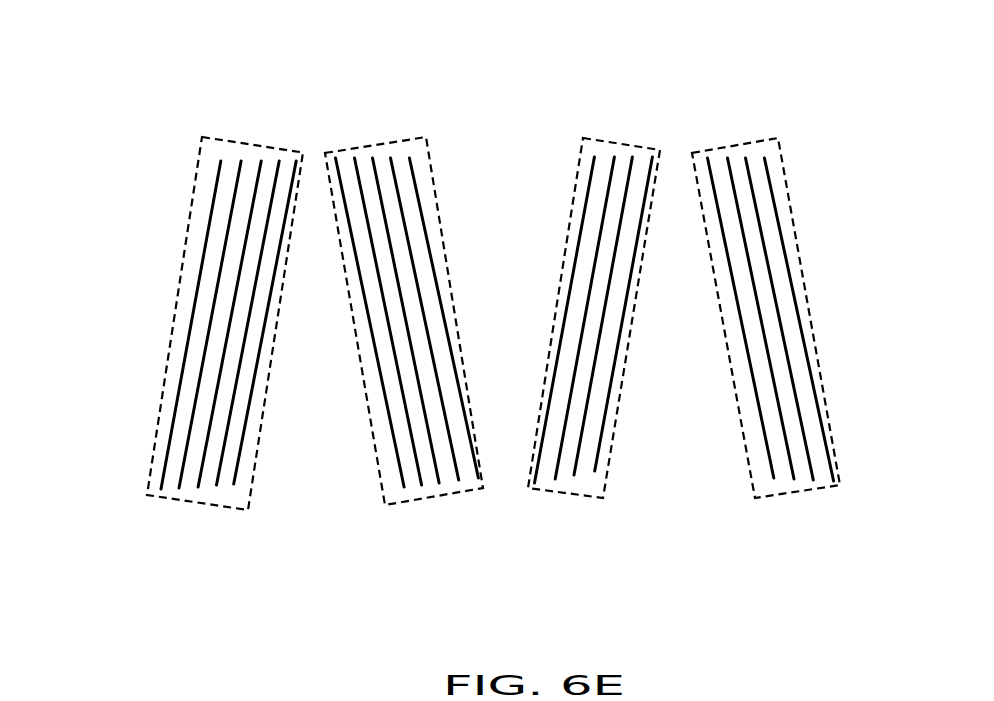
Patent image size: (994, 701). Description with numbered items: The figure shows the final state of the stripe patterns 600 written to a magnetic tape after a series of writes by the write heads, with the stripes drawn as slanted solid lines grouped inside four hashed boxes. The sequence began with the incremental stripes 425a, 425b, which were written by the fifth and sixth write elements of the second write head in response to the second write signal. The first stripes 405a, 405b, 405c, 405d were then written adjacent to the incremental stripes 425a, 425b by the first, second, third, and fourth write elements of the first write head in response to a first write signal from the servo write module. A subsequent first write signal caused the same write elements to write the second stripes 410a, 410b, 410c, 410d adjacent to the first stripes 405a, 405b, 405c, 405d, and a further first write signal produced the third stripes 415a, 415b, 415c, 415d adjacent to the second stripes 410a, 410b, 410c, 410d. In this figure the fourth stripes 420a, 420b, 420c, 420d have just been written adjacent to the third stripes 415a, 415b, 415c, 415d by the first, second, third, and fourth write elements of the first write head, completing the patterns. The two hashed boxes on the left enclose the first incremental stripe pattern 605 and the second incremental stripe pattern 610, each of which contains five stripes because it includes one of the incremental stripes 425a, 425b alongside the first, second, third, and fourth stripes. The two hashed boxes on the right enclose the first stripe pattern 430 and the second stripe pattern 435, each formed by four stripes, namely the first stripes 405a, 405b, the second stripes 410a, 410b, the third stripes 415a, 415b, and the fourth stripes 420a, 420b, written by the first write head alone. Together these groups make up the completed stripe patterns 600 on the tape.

The stripe patterns 600 is at (85, 78).
The first incremental stripe pattern 605 is at (378, 455).
The second incremental stripe pattern 610 is at (272, 352).
The first stripe pattern 430 is at (812, 328).
The second stripe pattern 435 is at (622, 385).
The first stripe 405a is at (778, 160).
The first stripe 405b is at (595, 466).
The first stripe 405c is at (401, 165).
The first stripe 405d is at (222, 488).
The second stripe 410a is at (812, 475).
The second stripe 410b is at (634, 163).
The second stripe 410c is at (433, 477).
The second stripe 410d is at (258, 162).
The third stripe 415a is at (729, 160).
The third stripe 415b is at (558, 470).
The third stripe 415c is at (366, 165).
The third stripe 415d is at (183, 489).
The fourth stripe 420a is at (772, 473).
The fourth stripe 420b is at (594, 168).
The fourth stripe 420c is at (400, 478).
The fourth stripe 420d is at (220, 163).
The incremental stripe 425a is at (480, 483).
The incremental stripe 425b is at (293, 166).